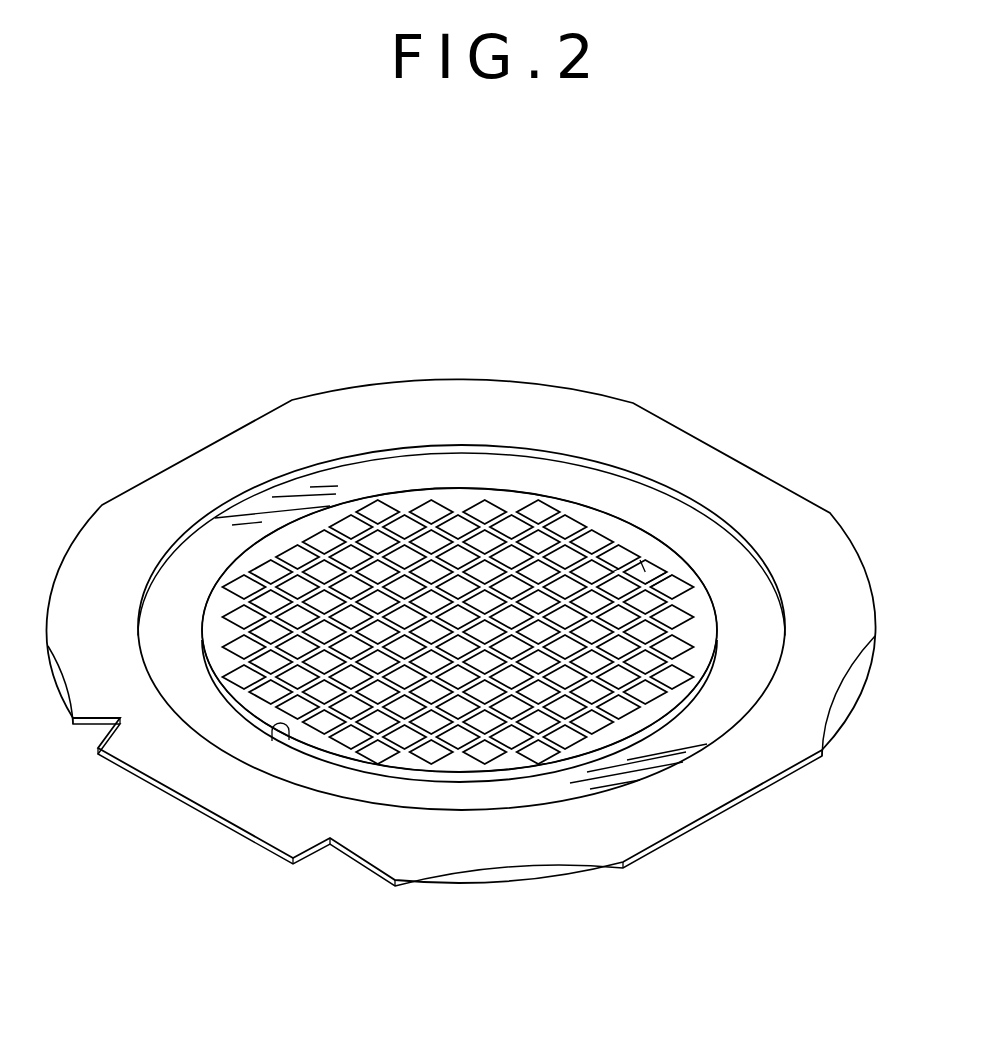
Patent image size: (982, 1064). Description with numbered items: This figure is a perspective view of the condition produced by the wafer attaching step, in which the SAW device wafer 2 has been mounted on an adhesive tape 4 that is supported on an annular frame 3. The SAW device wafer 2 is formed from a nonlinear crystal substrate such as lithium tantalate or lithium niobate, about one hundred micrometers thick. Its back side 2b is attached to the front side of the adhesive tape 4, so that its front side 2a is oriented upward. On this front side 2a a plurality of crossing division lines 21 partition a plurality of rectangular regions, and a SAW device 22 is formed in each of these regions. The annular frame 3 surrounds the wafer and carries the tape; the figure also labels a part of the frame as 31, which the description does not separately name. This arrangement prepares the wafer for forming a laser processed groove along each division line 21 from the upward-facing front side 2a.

The SAW device wafer 2 is at (408, 484).
The front side 2a is at (624, 527).
The back side 2b is at (473, 783).
The division lines 21 is at (535, 498).
The SAW devices 22 is at (673, 583).
The annular frame 3 is at (827, 565).
The opening of annular frame 31 is at (263, 480).
The adhesive tape 4 is at (183, 577).